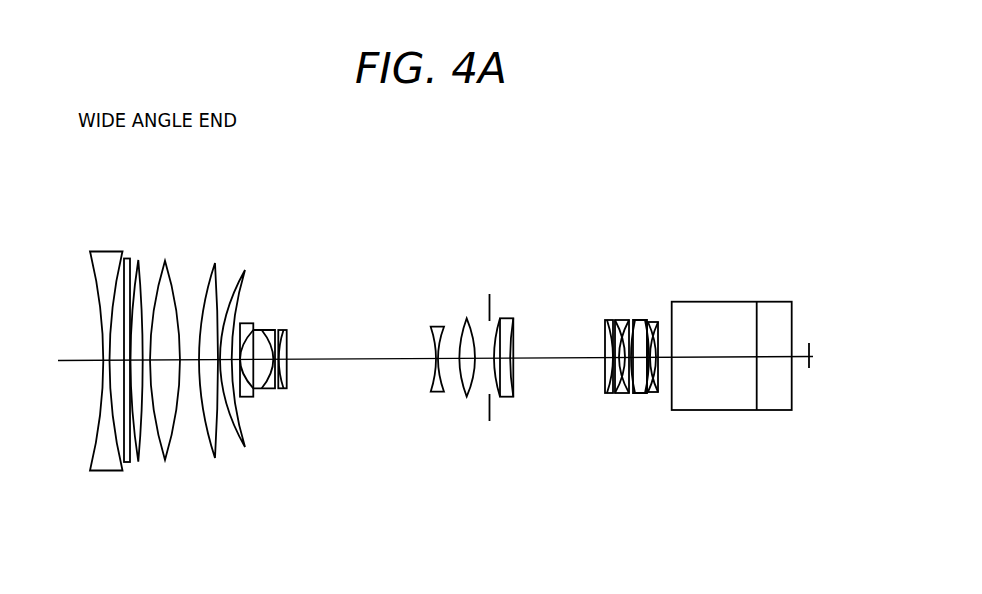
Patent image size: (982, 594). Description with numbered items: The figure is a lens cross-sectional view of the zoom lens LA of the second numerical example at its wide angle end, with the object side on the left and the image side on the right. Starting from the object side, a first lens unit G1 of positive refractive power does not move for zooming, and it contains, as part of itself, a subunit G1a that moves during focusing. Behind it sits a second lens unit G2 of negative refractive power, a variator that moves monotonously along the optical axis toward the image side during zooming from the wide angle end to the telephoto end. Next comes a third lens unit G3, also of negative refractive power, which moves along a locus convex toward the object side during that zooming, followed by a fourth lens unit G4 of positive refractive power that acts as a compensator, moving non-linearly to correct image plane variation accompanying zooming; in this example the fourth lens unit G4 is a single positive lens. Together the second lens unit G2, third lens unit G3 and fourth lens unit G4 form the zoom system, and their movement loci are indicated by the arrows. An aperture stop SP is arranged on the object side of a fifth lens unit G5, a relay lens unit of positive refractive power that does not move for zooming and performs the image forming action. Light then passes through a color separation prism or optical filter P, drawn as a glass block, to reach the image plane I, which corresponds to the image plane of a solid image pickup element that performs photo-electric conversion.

The zoom lens LA is at (652, 183).
The first lens unit G1 is at (259, 221).
The subunit G1a is at (202, 260).
The second lens unit G2 is at (243, 314).
The third lens unit G3 is at (425, 324).
The fourth lens unit G4 is at (457, 313).
The fifth lens unit G5 is at (663, 310).
The aperture stop SP is at (490, 294).
The color separation prism, optical filter, or the like P is at (669, 292).
The image plane I is at (809, 343).